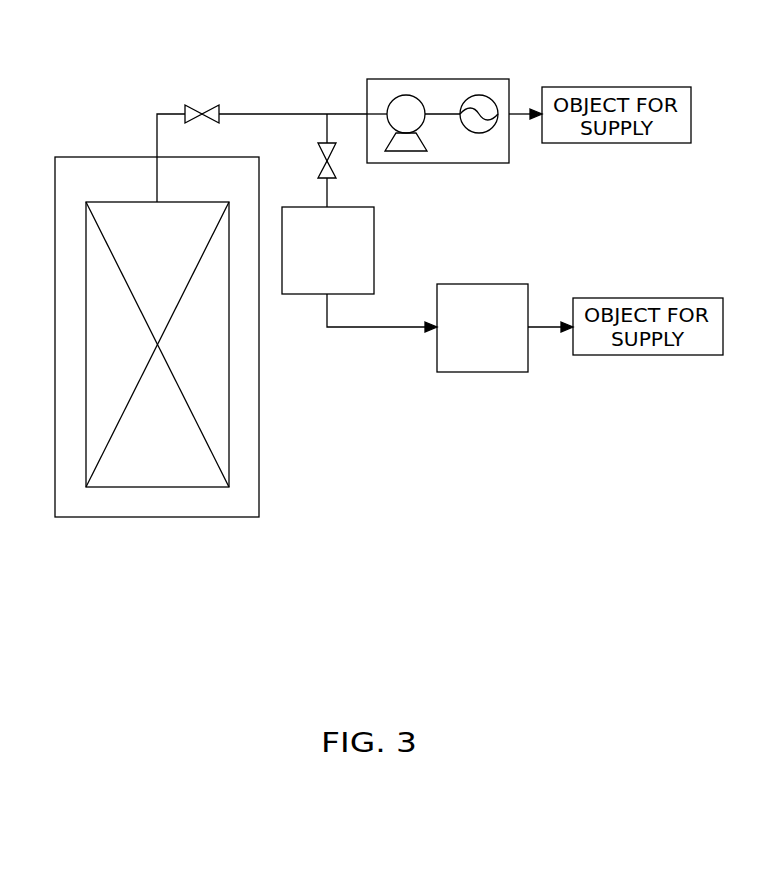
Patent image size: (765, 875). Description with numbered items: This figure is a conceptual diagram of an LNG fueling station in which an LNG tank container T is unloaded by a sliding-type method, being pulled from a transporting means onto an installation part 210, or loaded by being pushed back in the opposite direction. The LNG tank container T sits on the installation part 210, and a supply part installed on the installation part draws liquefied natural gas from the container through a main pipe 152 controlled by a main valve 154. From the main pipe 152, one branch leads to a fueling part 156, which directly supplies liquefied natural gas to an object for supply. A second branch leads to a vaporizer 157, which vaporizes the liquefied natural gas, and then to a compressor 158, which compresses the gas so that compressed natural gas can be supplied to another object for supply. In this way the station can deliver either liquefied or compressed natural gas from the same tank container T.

The main pipe 152 is at (155, 133).
The main valve 154 is at (210, 104).
The fueling part 156 is at (470, 79).
The vaporizer 157 is at (303, 295).
The compressor 158 is at (497, 284).
The LNG tank container T is at (100, 340).
The installation part 210 is at (70, 518).